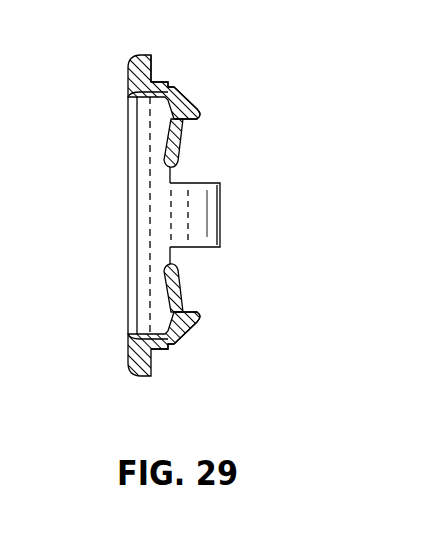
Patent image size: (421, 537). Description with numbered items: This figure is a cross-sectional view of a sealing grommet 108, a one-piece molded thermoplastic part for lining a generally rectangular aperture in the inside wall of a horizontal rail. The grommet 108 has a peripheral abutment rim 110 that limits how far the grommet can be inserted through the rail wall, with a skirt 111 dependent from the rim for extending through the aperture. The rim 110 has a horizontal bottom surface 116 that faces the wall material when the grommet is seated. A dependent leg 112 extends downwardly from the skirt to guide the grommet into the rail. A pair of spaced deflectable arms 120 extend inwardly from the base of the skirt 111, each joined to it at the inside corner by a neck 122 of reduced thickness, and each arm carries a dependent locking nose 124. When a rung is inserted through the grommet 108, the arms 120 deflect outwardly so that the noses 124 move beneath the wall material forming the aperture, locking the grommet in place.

The sealing grommet 108 is at (84, 291).
The peripheral abutment rim 110 is at (137, 63).
The skirt 111 is at (150, 80).
The dependent leg 112 is at (221, 207).
The horizontal bottom surface 116 is at (152, 362).
The deflectable arm 120 is at (172, 158).
The neck 122 is at (167, 92).
The locking nose 124 is at (197, 115).